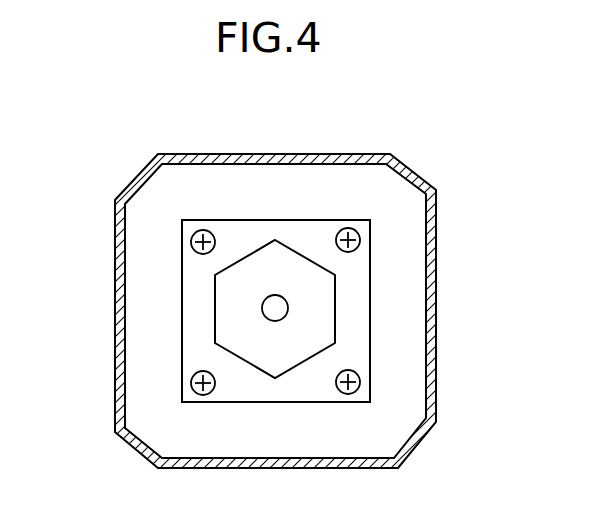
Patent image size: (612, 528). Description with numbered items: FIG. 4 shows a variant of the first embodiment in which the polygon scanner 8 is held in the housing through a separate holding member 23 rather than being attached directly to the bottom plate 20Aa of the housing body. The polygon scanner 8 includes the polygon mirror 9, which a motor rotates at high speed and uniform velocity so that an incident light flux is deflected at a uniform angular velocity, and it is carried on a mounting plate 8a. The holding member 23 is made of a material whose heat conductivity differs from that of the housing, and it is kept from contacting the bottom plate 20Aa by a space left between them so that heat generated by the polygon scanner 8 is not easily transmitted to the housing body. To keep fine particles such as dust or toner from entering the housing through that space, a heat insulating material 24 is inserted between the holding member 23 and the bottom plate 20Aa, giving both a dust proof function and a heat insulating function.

The bottom plate 20Aa is at (83, 244).
The polygon scanner 8 is at (180, 362).
The mounting plate 8a is at (195, 315).
The polygon mirror 9 is at (285, 355).
The holding member 23 is at (400, 263).
The heat insulating material 24 is at (432, 363).